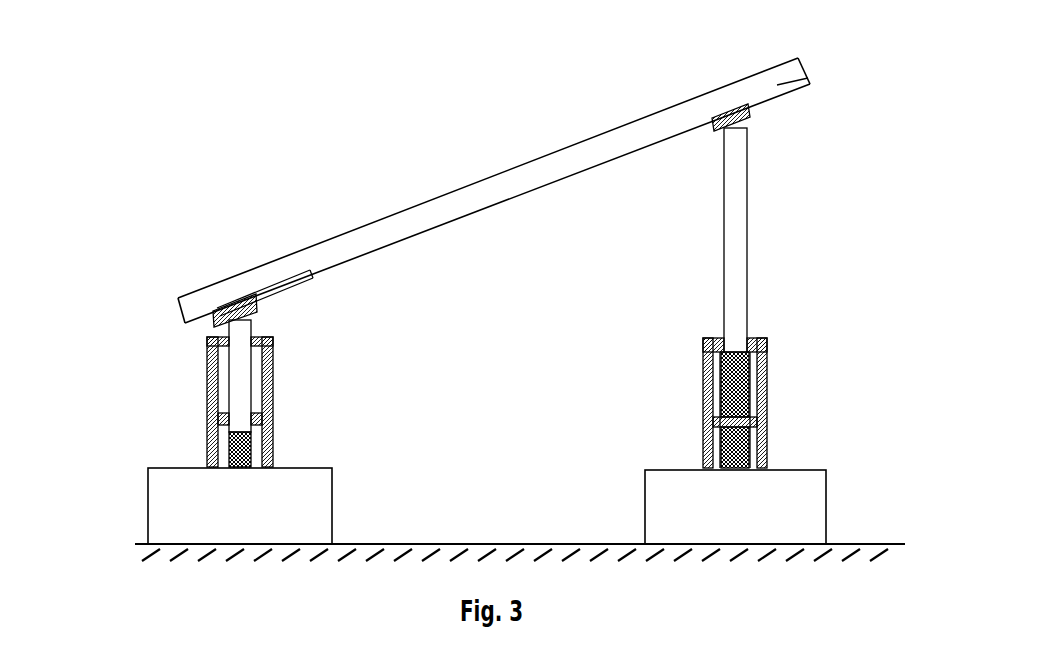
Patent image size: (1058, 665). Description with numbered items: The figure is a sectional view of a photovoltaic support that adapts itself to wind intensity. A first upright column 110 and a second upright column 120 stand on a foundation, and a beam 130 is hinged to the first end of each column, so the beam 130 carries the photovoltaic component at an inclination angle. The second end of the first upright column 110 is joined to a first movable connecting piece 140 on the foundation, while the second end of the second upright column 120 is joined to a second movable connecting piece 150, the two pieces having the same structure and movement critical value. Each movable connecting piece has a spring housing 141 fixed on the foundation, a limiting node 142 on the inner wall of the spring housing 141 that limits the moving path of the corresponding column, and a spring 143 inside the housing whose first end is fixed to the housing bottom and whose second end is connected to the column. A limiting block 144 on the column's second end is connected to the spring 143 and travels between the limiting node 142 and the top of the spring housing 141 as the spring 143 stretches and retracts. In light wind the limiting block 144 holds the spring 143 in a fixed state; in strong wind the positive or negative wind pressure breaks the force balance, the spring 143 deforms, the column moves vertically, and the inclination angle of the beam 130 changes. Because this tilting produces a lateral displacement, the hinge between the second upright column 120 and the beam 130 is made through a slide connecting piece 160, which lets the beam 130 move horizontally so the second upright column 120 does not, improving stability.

The first upright column 110 is at (750, 232).
The second upright column 120 is at (240, 382).
The beam 130 is at (797, 72).
The first movable connecting piece 140 is at (767, 357).
The spring housing 141 is at (207, 393).
The limiting node 142 is at (705, 422).
The spring 143 is at (770, 443).
The limiting block 144 is at (705, 338).
The second movable connecting piece 150 is at (277, 450).
The slide connecting piece 160 is at (258, 283).